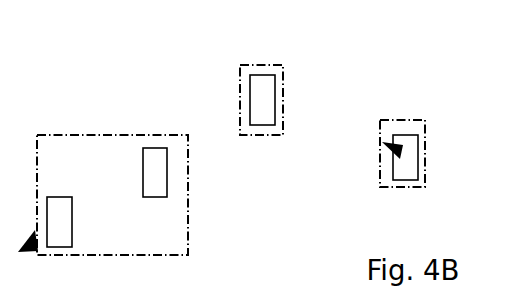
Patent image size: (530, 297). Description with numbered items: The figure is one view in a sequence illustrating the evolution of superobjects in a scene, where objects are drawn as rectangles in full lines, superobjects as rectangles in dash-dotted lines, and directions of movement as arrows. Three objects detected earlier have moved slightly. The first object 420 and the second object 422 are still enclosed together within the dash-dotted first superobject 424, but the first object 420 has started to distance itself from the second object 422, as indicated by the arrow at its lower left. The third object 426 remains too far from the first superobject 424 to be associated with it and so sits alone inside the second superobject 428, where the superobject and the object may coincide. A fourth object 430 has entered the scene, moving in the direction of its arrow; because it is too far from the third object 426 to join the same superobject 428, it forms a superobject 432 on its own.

The first object 420 is at (50, 197).
The second object 422 is at (167, 175).
The first superobject 424 is at (80, 133).
The third object 426 is at (250, 101).
The second superobject 428 is at (283, 135).
The fourth object 430 is at (410, 133).
The superobject 432 is at (380, 120).